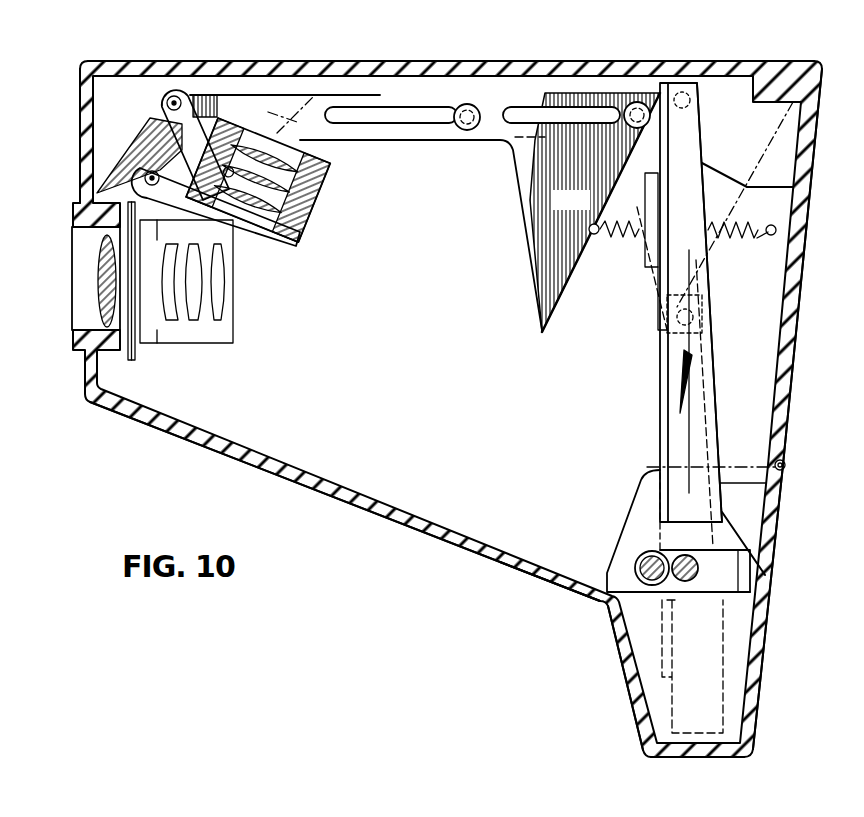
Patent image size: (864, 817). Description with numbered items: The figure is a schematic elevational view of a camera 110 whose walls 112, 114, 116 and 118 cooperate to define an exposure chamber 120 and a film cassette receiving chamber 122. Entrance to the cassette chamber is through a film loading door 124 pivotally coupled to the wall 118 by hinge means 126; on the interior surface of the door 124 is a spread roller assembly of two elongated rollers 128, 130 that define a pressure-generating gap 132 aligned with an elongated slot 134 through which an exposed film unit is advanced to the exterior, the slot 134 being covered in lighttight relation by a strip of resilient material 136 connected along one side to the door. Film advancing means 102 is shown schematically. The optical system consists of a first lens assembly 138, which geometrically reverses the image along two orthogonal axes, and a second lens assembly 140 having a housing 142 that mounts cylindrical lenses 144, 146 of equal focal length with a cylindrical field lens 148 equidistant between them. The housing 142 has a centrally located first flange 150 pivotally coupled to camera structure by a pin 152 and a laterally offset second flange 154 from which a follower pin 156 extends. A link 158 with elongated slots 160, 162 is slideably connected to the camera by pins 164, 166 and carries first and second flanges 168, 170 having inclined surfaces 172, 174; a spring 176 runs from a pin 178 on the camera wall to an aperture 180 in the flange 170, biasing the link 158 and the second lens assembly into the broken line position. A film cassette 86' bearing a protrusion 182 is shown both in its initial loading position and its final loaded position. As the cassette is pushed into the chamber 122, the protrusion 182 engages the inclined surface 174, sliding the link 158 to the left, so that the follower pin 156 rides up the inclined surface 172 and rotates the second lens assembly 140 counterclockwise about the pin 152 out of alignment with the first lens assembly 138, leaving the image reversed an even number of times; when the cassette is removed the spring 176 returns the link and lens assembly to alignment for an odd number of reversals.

The film cassette 86' is at (728, 302).
The film advancing means 102 is at (668, 175).
The camera 110 is at (400, 545).
The wall 112 is at (556, 598).
The wall 114 is at (79, 150).
The wall 116 is at (410, 60).
The wall 118 is at (800, 305).
The exposure chamber 120 is at (345, 470).
The film cassette receiving chamber 122 is at (648, 406).
The film loading door 124 is at (770, 652).
The hinge means 126 is at (786, 465).
The elongated roller 128 is at (654, 553).
The elongated roller 130 is at (688, 592).
The pressure-generating gap 132 is at (664, 593).
The elongated slot 134 is at (640, 738).
The strip of resilient material 136 is at (678, 750).
The first lens assembly 138 is at (62, 318).
The second lens assembly 140 is at (316, 224).
The housing 142 is at (329, 199).
The cylindrical lens 144 is at (258, 226).
The cylindrical lens 146 is at (328, 147).
The cylindrical field lens 148 is at (338, 171).
The first flange 150 is at (170, 152).
The pin 152 is at (149, 172).
The second flange 154 is at (216, 168).
The follower pin 156 is at (166, 100).
The link 158 is at (488, 152).
The elongated slot 160 is at (376, 118).
The elongated slot 162 is at (538, 112).
The pin 164 is at (465, 104).
The pin 166 is at (628, 104).
The first flange 168 is at (168, 126).
The second flange 170 is at (530, 234).
The inclined surface 172 is at (165, 136).
The inclined surface 174 is at (586, 266).
The spring 176 is at (636, 238).
The pin 178 is at (766, 233).
The aperture 180 is at (594, 224).
The protrusion 182 is at (692, 110).